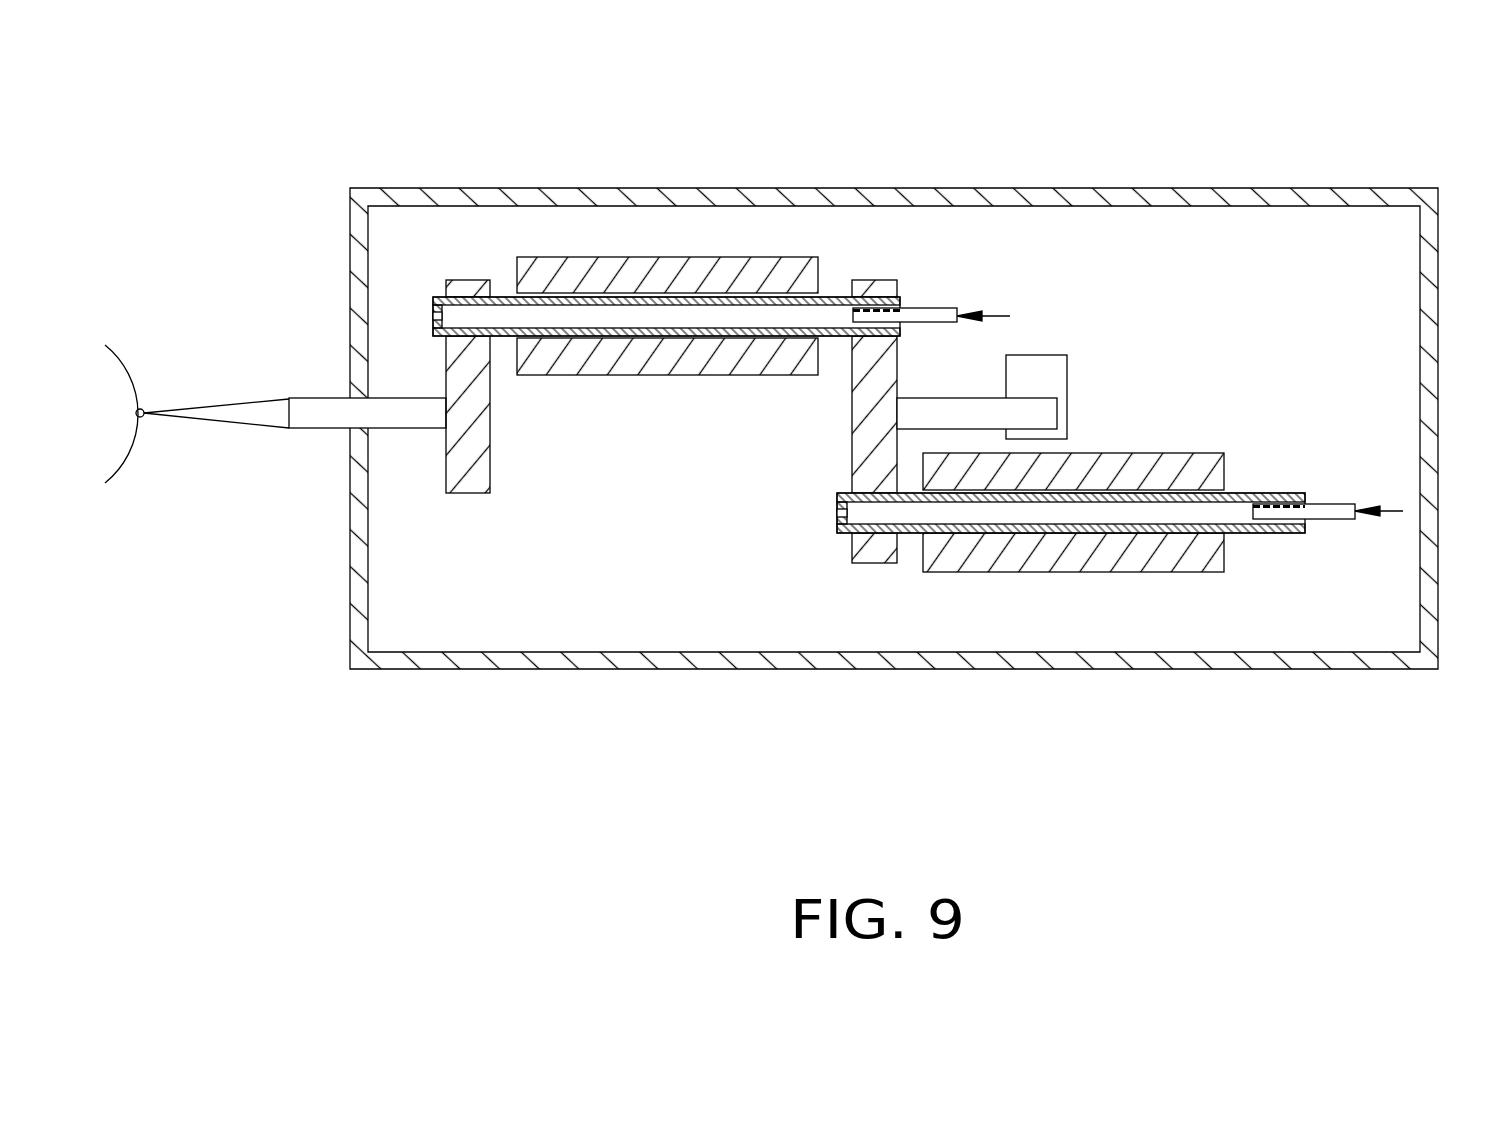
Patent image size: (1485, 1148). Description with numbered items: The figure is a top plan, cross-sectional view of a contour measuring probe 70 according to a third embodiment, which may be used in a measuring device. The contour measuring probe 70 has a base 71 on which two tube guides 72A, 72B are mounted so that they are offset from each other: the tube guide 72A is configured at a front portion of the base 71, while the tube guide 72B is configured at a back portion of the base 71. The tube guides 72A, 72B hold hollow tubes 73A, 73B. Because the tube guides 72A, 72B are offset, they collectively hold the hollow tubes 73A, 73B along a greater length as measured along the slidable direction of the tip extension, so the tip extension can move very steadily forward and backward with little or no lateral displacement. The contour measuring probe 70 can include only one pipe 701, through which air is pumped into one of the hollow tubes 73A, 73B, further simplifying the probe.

The contour measuring probe 70 is at (352, 132).
The base 71 is at (1173, 225).
The tube guide 72A is at (620, 275).
The tube guide 72B is at (1130, 557).
The hollow tube 73A is at (433, 297).
The hollow tube 73B is at (915, 527).
The pipe 701 is at (933, 305).